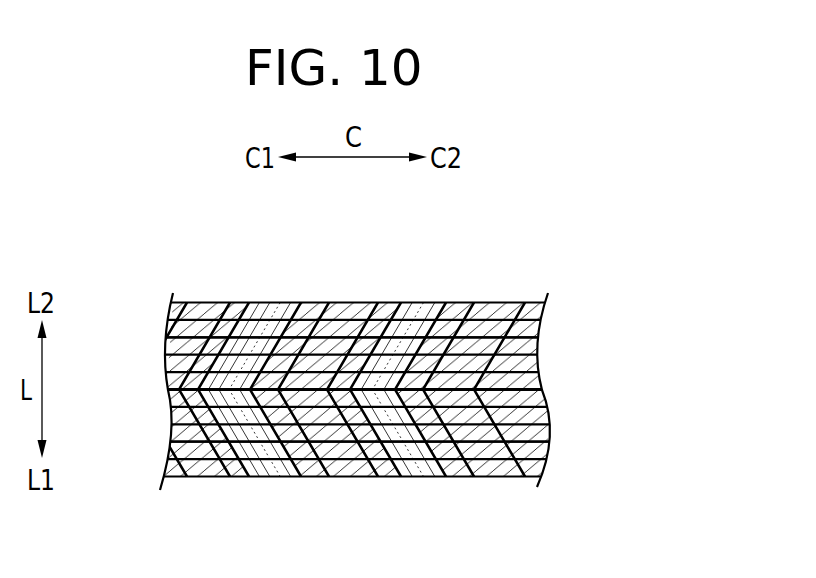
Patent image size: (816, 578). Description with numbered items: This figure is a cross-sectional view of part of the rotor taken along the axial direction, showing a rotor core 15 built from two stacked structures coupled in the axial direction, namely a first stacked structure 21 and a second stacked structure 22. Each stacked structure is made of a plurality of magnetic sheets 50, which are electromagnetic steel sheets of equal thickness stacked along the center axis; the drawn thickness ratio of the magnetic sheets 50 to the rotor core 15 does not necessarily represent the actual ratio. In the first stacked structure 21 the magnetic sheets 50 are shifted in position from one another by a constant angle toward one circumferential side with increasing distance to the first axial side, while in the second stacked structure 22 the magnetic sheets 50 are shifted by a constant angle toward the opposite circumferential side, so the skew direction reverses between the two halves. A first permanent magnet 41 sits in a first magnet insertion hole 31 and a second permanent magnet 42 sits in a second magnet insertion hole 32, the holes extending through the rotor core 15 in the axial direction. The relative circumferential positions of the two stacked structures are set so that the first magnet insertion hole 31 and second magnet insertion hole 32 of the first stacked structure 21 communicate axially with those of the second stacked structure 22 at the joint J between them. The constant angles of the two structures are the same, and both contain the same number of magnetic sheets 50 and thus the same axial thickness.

The rotor core 15 is at (198, 301).
The first stacked structure 21 is at (528, 297).
The second stacked structure 22 is at (510, 477).
The first magnet insertion hole 31 is at (237, 302).
The second magnet insertion hole 32 is at (463, 302).
The first permanent magnet 41 is at (283, 302).
The second permanent magnet 42 is at (418, 302).
The magnetic sheet 50 is at (532, 367).
The joint J is at (550, 387).